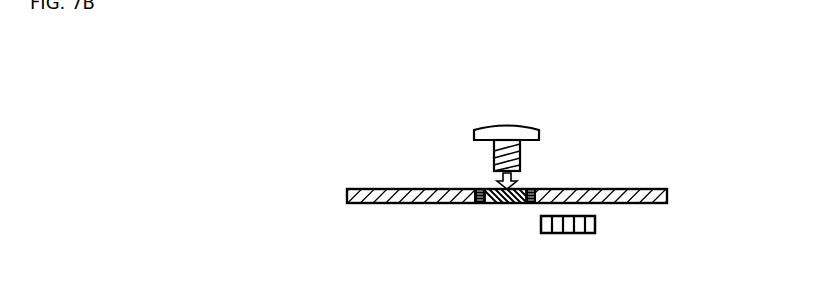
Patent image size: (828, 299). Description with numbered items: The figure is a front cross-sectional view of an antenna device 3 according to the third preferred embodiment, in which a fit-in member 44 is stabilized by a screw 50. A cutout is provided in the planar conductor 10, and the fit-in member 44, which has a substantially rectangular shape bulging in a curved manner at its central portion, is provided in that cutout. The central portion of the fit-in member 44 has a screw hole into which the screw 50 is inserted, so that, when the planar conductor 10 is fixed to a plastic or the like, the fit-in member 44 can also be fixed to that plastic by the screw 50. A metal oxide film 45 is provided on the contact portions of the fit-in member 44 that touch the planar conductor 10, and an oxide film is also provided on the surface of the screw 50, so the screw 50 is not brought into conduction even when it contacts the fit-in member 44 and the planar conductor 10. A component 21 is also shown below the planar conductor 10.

The electronic device assembly 3 is at (364, 124).
The planar conductor 10 is at (363, 197).
The metal oxide film 45 is at (478, 190).
The fit-in member 44 is at (502, 204).
The screw 50 is at (490, 129).
The connector 21 is at (588, 241).